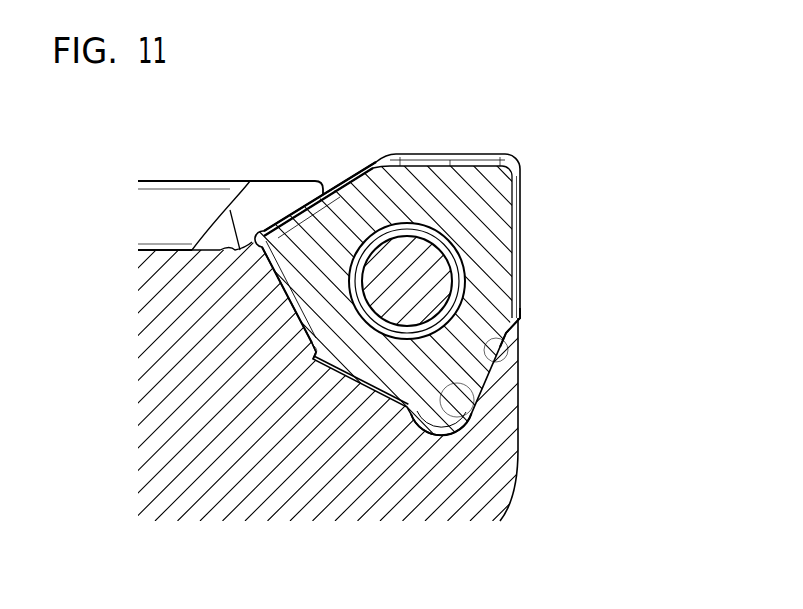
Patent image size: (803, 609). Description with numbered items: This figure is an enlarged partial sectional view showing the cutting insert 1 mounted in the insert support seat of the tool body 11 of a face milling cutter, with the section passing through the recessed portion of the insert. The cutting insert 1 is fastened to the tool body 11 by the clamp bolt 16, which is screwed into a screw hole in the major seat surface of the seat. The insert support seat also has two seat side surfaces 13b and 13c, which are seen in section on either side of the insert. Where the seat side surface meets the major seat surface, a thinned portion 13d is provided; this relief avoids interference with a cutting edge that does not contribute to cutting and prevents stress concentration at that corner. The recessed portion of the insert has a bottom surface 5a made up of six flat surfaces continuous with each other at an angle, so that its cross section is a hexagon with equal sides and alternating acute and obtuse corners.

The cutting insert 1 is at (523, 200).
The clamp bolt 16 is at (420, 279).
The seat side surface 13b is at (293, 305).
The seat side surface 13c is at (512, 321).
The thinned portion 13d is at (468, 383).
The tool body 11 is at (467, 462).
The bottom surface 5a is at (312, 334).